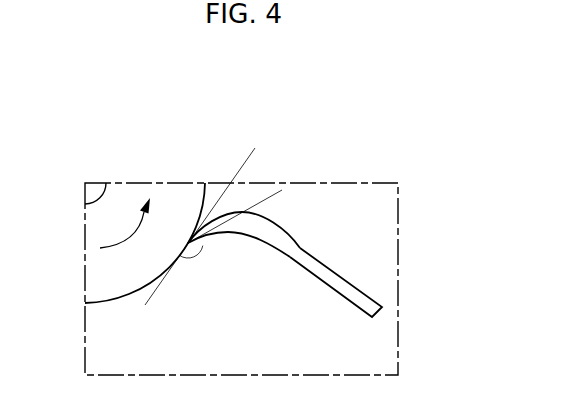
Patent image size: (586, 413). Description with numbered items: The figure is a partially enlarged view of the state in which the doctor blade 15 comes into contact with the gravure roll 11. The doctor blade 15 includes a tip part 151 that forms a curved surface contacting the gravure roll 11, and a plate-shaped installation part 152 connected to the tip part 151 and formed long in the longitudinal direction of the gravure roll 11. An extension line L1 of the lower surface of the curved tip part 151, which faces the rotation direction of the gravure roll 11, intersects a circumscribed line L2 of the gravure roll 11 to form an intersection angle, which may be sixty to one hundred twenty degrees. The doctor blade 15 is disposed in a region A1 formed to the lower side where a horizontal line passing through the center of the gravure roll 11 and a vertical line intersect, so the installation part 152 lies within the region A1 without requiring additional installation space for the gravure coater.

The gravure roll 11 is at (97, 277).
The doctor blade 15 is at (285, 286).
The tip part 151 is at (277, 242).
The installation part 152 is at (333, 282).
The region A1 is at (378, 183).
The extension line L1 is at (272, 196).
The circumscribed line L2 is at (252, 153).